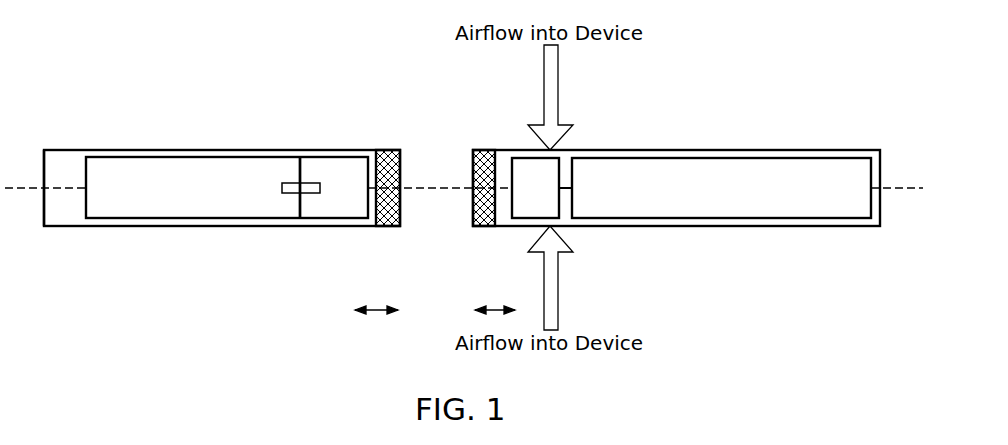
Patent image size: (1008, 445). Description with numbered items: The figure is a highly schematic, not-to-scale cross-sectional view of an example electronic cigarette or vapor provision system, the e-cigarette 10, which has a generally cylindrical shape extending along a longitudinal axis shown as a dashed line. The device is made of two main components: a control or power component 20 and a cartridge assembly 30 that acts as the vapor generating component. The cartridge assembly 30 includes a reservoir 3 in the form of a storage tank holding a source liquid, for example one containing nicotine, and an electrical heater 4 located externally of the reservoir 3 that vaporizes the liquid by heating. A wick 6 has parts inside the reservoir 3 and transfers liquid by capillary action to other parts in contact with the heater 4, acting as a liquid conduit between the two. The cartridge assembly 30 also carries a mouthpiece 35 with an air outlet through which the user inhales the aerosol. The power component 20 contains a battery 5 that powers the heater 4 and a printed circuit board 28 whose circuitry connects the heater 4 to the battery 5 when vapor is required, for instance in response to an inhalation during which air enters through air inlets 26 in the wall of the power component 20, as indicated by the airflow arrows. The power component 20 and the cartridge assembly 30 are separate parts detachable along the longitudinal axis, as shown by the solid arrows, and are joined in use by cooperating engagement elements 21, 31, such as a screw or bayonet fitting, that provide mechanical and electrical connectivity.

The e-cigarette 10 is at (197, 270).
The power component 20 is at (742, 228).
The engagement element 21 is at (483, 228).
The air inlet 26 is at (550, 148).
The printed circuit board 28 is at (537, 178).
The cartridge assembly 30 is at (207, 150).
The engagement element 31 is at (387, 150).
The mouthpiece 35 is at (44, 172).
The reservoir 3 is at (227, 187).
The heater 4 is at (318, 187).
The battery 5 is at (721, 188).
The wick 6 is at (293, 195).